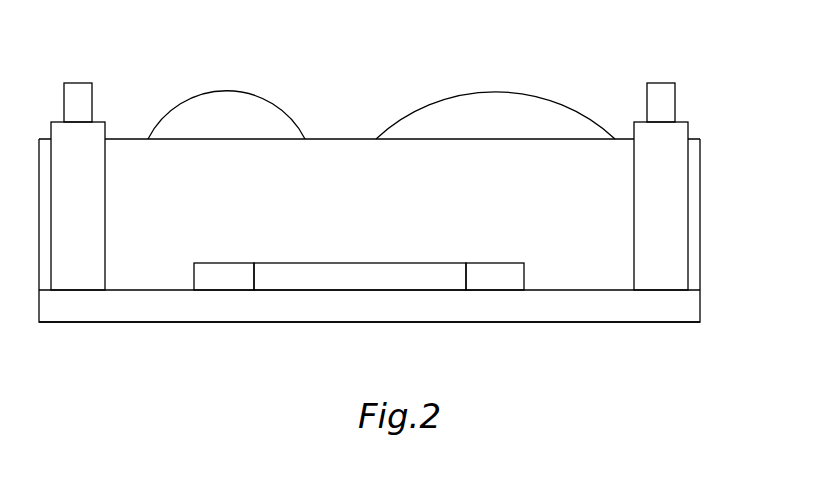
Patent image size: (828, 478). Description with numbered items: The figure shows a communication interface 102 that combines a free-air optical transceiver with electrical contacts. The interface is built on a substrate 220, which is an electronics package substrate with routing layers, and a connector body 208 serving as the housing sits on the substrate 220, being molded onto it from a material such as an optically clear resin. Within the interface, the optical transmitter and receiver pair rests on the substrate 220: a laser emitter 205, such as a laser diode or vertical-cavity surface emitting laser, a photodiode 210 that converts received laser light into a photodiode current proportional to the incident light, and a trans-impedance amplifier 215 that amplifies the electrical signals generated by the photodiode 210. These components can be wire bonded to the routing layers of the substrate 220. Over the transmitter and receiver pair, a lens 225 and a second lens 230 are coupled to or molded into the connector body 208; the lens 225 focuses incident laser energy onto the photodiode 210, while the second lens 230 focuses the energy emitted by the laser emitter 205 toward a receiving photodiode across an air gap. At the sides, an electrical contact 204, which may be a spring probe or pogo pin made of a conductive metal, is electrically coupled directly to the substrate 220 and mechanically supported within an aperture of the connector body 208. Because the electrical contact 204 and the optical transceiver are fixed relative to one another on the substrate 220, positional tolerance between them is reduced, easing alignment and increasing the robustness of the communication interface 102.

The communication interface 102 is at (641, 47).
The electrical contact 204 is at (678, 100).
The connector body 208 is at (702, 222).
The substrate 220 is at (702, 305).
The laser emitter 205 is at (215, 281).
The photodiode 210 is at (495, 283).
The trans-impedance amplifier 215 is at (299, 281).
The lens 225 is at (497, 97).
The second lens 230 is at (228, 95).